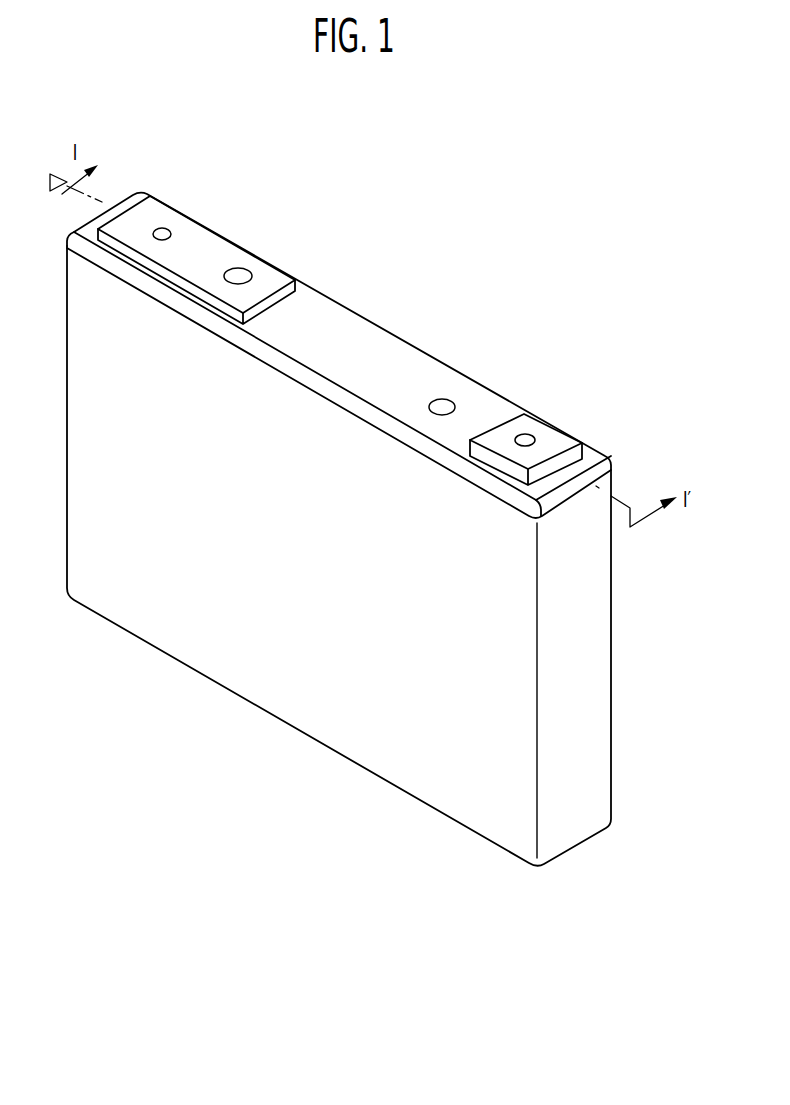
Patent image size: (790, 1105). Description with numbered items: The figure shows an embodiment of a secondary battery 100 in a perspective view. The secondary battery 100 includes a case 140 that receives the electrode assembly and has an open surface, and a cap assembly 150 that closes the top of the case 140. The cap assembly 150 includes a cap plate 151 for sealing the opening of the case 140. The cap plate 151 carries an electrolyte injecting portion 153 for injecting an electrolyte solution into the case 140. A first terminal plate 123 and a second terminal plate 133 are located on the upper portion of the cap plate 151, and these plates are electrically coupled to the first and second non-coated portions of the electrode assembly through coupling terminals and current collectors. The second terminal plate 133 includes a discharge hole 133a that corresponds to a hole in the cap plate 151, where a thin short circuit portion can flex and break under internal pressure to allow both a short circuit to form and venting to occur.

The secondary battery 100 is at (369, 507).
The case 140 is at (339, 556).
The cap assembly 150 is at (369, 337).
The cap plate 151 is at (369, 355).
The electrolyte injecting portion 153 is at (461, 366).
The first terminal plate 123 is at (536, 426).
The second terminal plate 133 is at (196, 240).
The discharge hole 133a is at (257, 234).